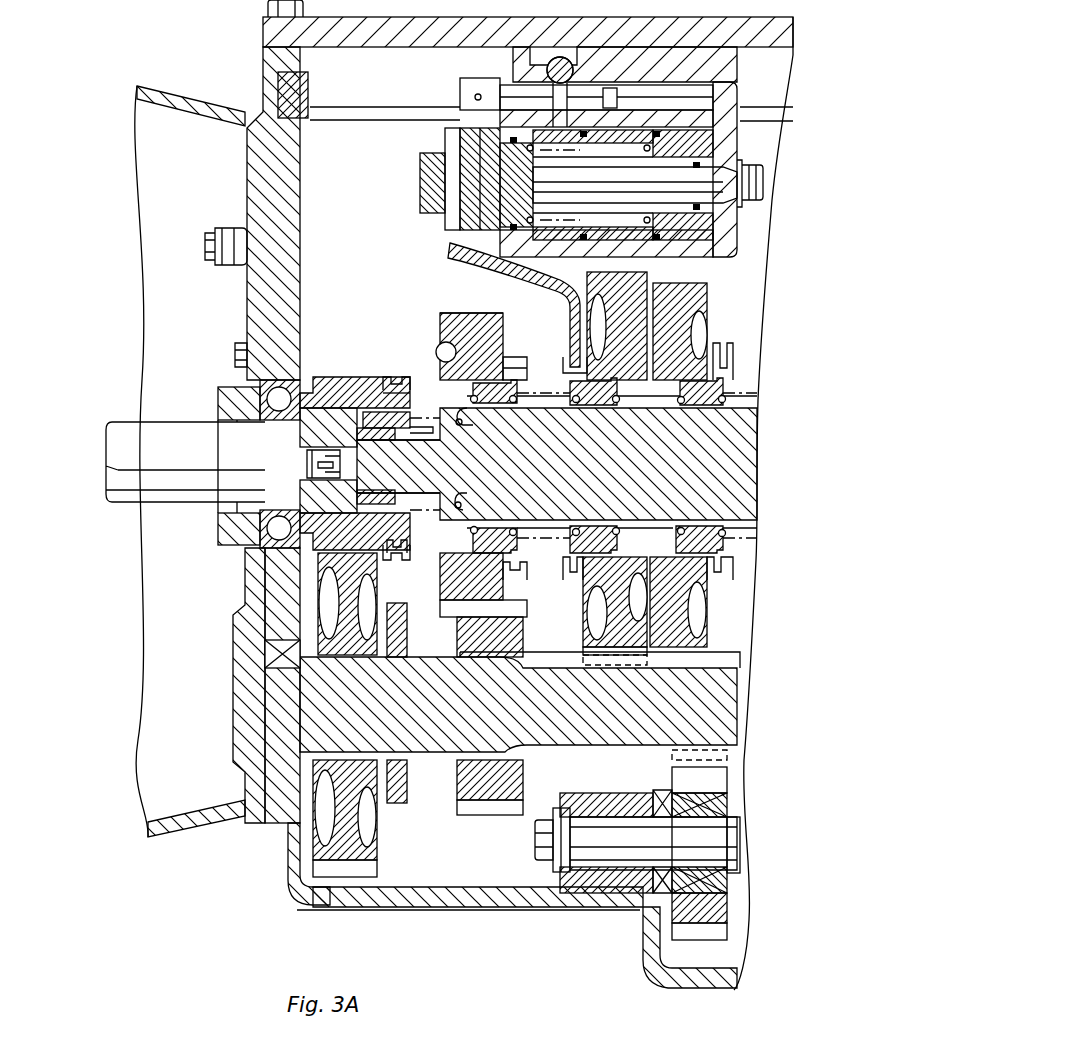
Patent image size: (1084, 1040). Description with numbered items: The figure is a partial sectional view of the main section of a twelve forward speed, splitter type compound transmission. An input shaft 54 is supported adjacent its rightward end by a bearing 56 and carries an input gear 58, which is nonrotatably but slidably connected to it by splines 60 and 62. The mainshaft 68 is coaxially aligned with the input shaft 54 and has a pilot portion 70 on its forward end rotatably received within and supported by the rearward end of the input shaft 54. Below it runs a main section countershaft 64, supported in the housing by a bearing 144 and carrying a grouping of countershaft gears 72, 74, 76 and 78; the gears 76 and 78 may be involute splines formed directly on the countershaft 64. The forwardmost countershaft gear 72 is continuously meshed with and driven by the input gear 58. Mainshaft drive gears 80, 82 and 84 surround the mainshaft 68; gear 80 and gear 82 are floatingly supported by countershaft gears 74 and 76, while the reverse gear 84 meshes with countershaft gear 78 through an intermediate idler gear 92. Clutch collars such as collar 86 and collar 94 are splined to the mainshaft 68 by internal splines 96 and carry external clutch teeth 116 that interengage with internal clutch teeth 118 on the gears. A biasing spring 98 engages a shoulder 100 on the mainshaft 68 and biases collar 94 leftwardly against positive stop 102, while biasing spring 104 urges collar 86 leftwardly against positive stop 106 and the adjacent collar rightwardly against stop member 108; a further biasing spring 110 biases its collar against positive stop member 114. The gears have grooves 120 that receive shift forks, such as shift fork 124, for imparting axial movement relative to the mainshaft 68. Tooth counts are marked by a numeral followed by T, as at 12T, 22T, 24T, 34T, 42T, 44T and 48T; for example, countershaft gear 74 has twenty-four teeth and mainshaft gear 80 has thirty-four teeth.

The input shaft 54 is at (128, 437).
The bearing 56 is at (305, 378).
The input gear 58 is at (322, 378).
The splines 60 is at (319, 428).
The splines 62 is at (308, 506).
The main section countershaft 64 is at (417, 712).
The mainshaft 68 is at (733, 487).
The pilot portion 70 is at (335, 490).
The countershaft gear 72 is at (373, 593).
The countershaft gear 74 is at (460, 637).
The countershaft gear 76 is at (597, 665).
The countershaft gear 78 is at (727, 660).
The main section mainshaft drive gear 80 is at (443, 333).
The main section mainshaft drive gear 82 is at (628, 365).
The mainshaft gear 84 is at (693, 365).
The clutch collar 86 is at (496, 392).
The intermediate idler gear 92 is at (720, 915).
The clutch collar 94 is at (446, 493).
The internal splines 96 is at (462, 507).
The biasing spring 98 is at (410, 420).
The shoulder 100 is at (460, 411).
The positive stop 102 is at (380, 493).
The biasing spring 104 is at (525, 394).
The positive stop 106 is at (469, 346).
The stop member 108 is at (608, 405).
The biasing spring 110 is at (750, 398).
The positive stop member 114 is at (683, 406).
The external clutch teeth 116 is at (600, 393).
The internal clutch teeth 118 is at (441, 378).
The grooves 120 is at (394, 377).
The shift fork 124 is at (570, 316).
The bearing 144 is at (275, 655).
The tooth count 12T is at (697, 704).
The tooth count 22T is at (699, 772).
The tooth count 24T is at (416, 532).
The tooth count 34T is at (483, 585).
The tooth count 42T is at (400, 787).
The tooth count 44T is at (693, 623).
The tooth count 48T is at (350, 563).